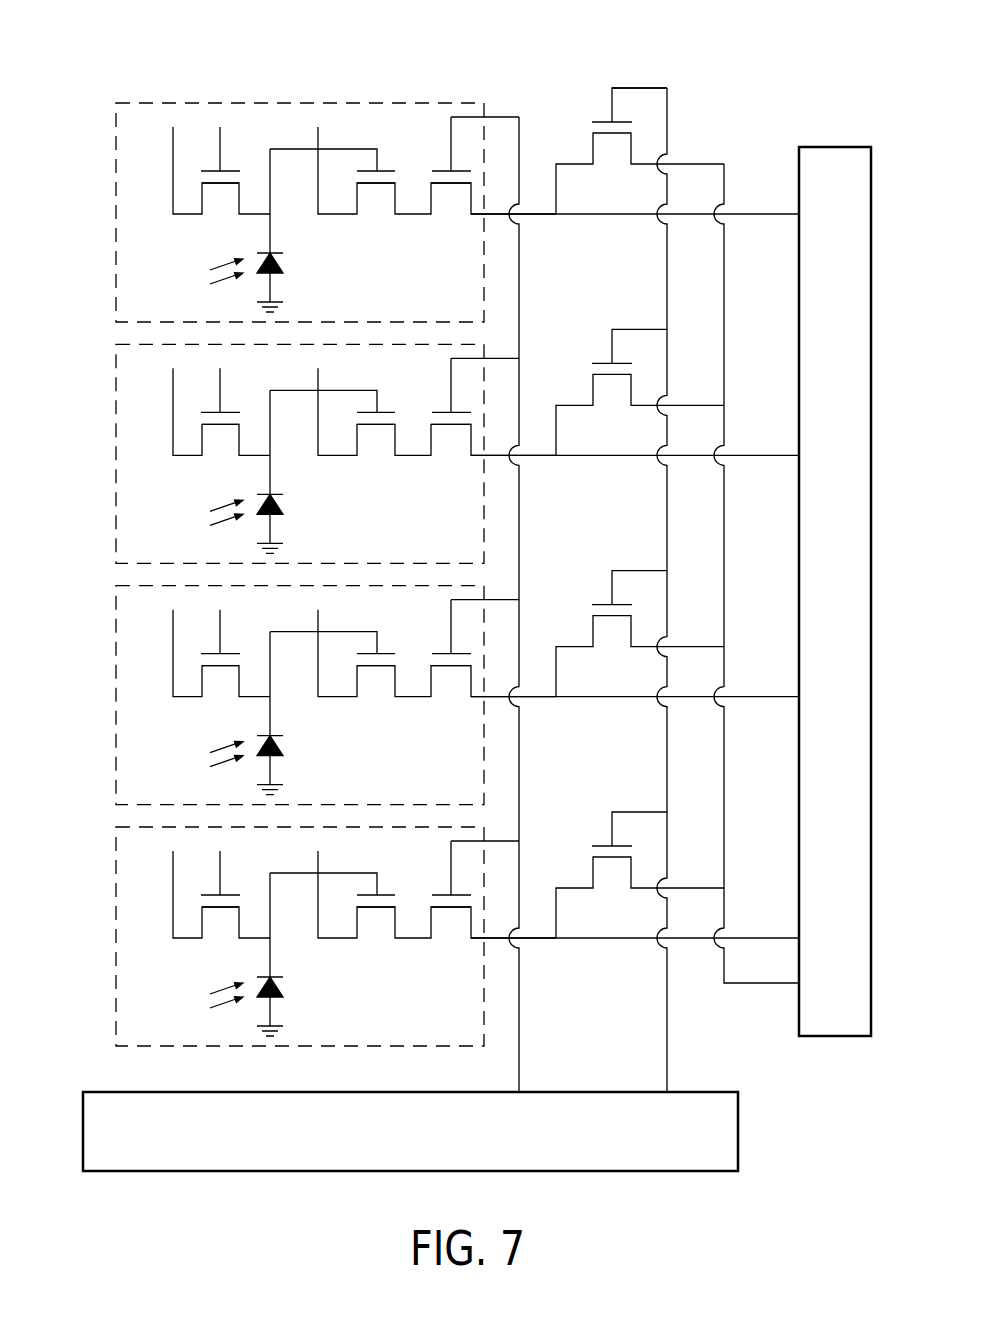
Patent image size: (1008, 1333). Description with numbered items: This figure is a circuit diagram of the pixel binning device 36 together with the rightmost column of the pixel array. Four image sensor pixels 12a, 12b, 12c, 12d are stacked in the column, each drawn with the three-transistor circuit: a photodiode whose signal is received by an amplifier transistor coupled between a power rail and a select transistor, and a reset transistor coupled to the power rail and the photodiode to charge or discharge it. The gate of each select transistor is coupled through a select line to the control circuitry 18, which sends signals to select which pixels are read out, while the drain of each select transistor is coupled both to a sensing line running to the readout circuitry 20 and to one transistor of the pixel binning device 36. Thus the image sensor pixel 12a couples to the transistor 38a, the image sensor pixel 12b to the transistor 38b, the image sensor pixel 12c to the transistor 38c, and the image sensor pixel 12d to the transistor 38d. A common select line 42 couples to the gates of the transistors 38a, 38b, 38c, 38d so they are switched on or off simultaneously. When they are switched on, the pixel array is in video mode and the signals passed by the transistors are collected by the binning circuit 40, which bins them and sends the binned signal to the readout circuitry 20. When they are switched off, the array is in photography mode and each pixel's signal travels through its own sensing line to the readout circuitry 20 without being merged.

The image sensor pixel 12a is at (116, 183).
The image sensor pixel 12b is at (302, 453).
The image sensor pixel 12c is at (302, 695).
The image sensor pixel 12d is at (302, 936).
The control circuitry 18 is at (739, 1130).
The readout circuitry 20 is at (833, 147).
The pixel binning device 36 is at (667, 66).
The transistor 38a is at (612, 150).
The transistor 38b is at (640, 392).
The transistor 38c is at (640, 634).
The transistor 38d is at (640, 875).
The binning circuit 40 is at (725, 766).
The common select line 42 is at (669, 1033).